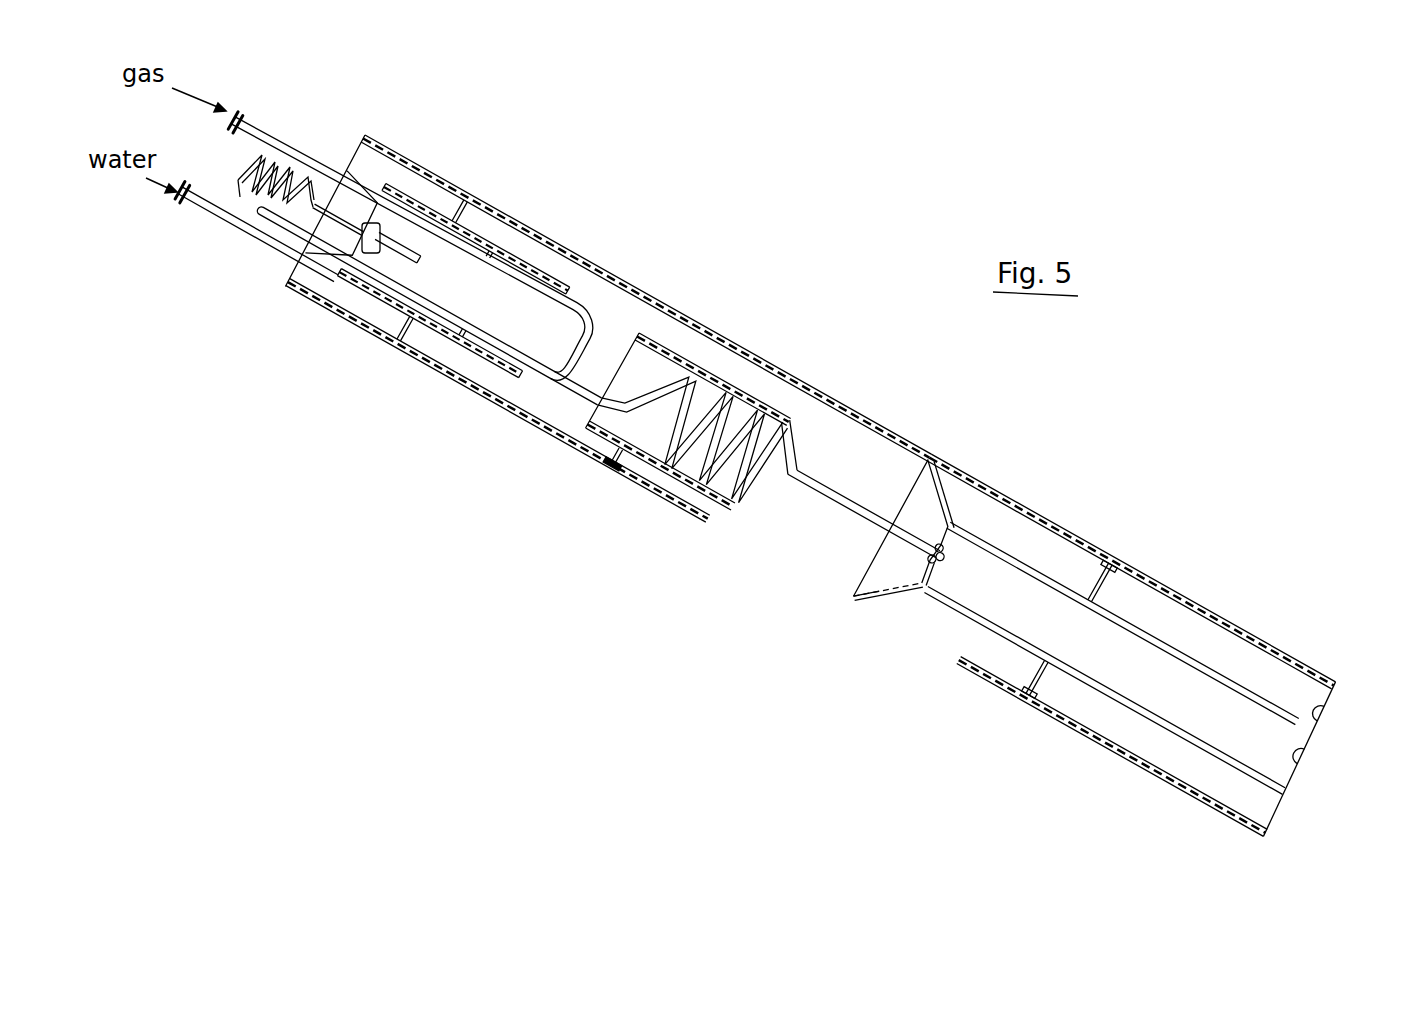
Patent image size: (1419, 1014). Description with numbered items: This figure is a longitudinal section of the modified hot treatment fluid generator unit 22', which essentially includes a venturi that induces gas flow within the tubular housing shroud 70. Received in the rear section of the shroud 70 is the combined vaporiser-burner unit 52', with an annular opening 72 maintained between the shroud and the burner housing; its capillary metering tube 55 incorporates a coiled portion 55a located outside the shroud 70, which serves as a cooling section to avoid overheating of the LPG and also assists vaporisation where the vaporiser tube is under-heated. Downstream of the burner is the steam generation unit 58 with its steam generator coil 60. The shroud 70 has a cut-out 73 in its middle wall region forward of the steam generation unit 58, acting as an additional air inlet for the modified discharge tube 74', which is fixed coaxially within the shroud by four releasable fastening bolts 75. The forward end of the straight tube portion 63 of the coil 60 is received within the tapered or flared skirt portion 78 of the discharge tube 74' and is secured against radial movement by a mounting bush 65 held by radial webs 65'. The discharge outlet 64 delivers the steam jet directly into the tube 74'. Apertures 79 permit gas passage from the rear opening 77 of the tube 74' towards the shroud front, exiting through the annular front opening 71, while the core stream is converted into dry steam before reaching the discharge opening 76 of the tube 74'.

The modified hot treatment fluid generator unit 22' is at (814, 485).
The tubular housing shroud 70 is at (1150, 578).
The annular opening 72 is at (350, 152).
The combined vaporiser-burner unit 52' is at (419, 258).
The coiled portion 55a is at (238, 178).
The capillary metering tube 55 is at (331, 175).
The steam generation unit 58 is at (734, 373).
The steam generator coil 60 is at (685, 462).
The cut-out 73 is at (792, 513).
The forward extending straight tube portion 63 is at (830, 492).
The rear opening 77 is at (912, 490).
The apertures 79 is at (950, 522).
The radial webs 65' is at (836, 614).
The tapered or flared skirt portion 78 is at (887, 596).
The discharge outlet 64 is at (946, 560).
The modified discharge tube 74' is at (1139, 623).
The mounting bush 65 is at (1013, 650).
The fastening bolts 75 is at (1045, 678).
The annular front opening 71 is at (1320, 704).
The discharge opening 76 is at (1292, 756).